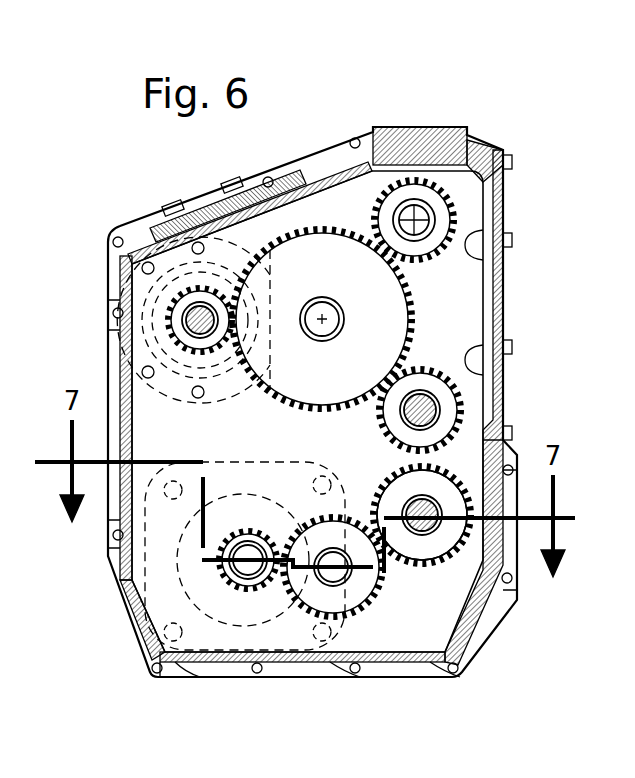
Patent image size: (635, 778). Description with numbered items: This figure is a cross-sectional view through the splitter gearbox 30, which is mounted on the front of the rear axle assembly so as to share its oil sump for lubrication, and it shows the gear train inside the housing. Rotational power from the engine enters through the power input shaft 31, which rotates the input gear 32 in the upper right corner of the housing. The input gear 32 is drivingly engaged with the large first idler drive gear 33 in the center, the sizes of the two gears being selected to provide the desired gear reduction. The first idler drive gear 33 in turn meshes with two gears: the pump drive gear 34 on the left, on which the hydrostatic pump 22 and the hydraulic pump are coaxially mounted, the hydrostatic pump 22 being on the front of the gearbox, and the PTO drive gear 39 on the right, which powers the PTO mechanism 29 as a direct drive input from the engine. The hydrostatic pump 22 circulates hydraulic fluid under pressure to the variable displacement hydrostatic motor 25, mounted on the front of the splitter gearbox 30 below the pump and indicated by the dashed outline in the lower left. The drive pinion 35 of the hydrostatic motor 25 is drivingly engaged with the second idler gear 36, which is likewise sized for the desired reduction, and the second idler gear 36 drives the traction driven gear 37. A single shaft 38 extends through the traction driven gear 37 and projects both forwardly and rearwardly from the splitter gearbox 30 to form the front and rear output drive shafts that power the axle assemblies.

The splitter gearbox 30 is at (413, 80).
The hydrostatic pump 22 is at (222, 399).
The variable displacement hydrostatic motor 25 is at (188, 597).
The power takeoff (PTO) mechanism 29 is at (441, 409).
The power input shaft 31 is at (433, 220).
The input gear 32 is at (445, 188).
The first idler drive gear 33 is at (418, 304).
The pump drive gear 34 is at (184, 312).
The drive pinion 35 is at (254, 592).
The second idler gear 36 is at (322, 600).
The traction driven gear 37 is at (438, 562).
The single shaft 38 is at (408, 502).
The PTO drive gear 39 is at (450, 388).